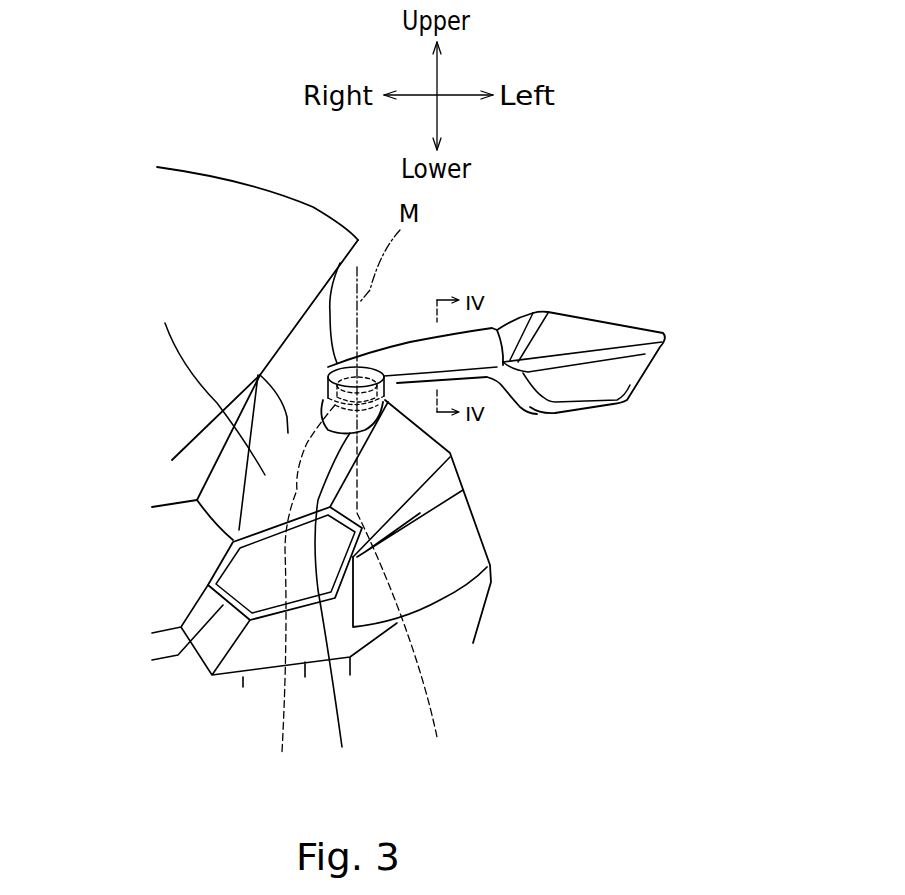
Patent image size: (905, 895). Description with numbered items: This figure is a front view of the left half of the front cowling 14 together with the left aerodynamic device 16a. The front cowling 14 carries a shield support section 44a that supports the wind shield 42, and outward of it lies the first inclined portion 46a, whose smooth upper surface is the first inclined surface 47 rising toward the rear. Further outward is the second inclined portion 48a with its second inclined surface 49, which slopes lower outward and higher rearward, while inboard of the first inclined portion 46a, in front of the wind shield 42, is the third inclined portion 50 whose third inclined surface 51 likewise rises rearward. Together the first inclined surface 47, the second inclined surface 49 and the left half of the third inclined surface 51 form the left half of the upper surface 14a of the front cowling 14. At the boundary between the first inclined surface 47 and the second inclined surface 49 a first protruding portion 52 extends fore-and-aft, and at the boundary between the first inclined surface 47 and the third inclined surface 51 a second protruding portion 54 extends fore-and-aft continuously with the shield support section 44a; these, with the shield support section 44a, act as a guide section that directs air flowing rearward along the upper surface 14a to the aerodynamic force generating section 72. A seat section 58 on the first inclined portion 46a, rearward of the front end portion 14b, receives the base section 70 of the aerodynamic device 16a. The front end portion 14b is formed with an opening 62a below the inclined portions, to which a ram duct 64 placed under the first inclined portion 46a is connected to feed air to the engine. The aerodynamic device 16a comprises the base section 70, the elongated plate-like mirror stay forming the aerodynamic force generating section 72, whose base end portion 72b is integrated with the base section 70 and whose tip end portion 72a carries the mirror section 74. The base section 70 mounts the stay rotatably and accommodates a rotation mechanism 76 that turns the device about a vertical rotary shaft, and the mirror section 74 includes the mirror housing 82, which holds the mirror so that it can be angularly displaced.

The front cowling 14 is at (506, 572).
The upper surface 14a is at (172, 460).
The front end portion 14b is at (163, 493).
The aerodynamic device 16a is at (619, 302).
The wind shield 42 is at (214, 195).
The shield support section 44a is at (307, 337).
The first inclined portion 46a is at (260, 375).
The first inclined surface 47 is at (208, 383).
The second inclined portion 48a is at (387, 462).
The second inclined surface 49 is at (368, 488).
The third inclined portion 50 is at (172, 462).
The third inclined surface 51 is at (170, 477).
The first protruding portion 52 is at (380, 435).
The second protruding portion 54 is at (233, 502).
The seat section 58 is at (302, 594).
The opening 62a is at (233, 617).
The ram duct 64 is at (178, 655).
The base section 70 is at (335, 608).
The aerodynamic force generating section 72 is at (433, 350).
The tip end portion 72a is at (507, 327).
The base end portion 72b is at (372, 358).
The mirror section 74 is at (628, 367).
The rotation mechanism 76 is at (405, 603).
The mirror housing 82 is at (607, 377).